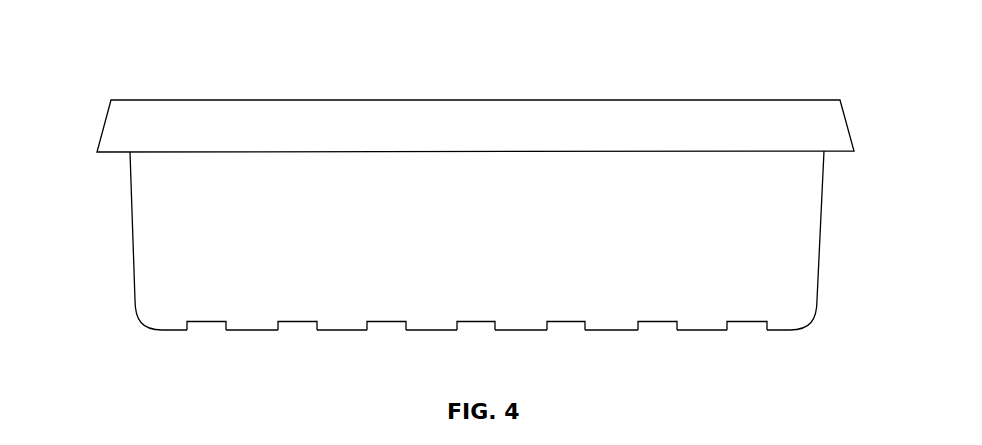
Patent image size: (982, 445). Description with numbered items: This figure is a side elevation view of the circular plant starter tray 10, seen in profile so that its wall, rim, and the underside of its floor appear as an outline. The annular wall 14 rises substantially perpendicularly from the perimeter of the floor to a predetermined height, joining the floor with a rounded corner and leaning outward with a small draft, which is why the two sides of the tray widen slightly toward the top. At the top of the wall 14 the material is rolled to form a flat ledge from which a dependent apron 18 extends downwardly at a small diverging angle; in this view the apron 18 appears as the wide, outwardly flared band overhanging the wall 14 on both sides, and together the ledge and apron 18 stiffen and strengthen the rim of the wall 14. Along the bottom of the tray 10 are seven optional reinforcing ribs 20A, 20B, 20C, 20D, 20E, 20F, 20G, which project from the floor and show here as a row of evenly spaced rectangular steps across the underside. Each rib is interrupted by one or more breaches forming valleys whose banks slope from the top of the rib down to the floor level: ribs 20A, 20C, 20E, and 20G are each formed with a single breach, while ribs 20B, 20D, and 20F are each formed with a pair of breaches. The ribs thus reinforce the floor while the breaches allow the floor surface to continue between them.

The circular plant starter tray 10 is at (126, 229).
The annular wall 14 is at (817, 232).
The dependent apron 18 is at (727, 110).
The reinforcing rib 20A is at (208, 321).
The reinforcing rib 20B is at (299, 321).
The reinforcing rib 20C is at (388, 321).
The reinforcing rib 20D is at (478, 321).
The reinforcing rib 20E is at (568, 321).
The reinforcing rib 20F is at (659, 321).
The reinforcing rib 20G is at (746, 321).